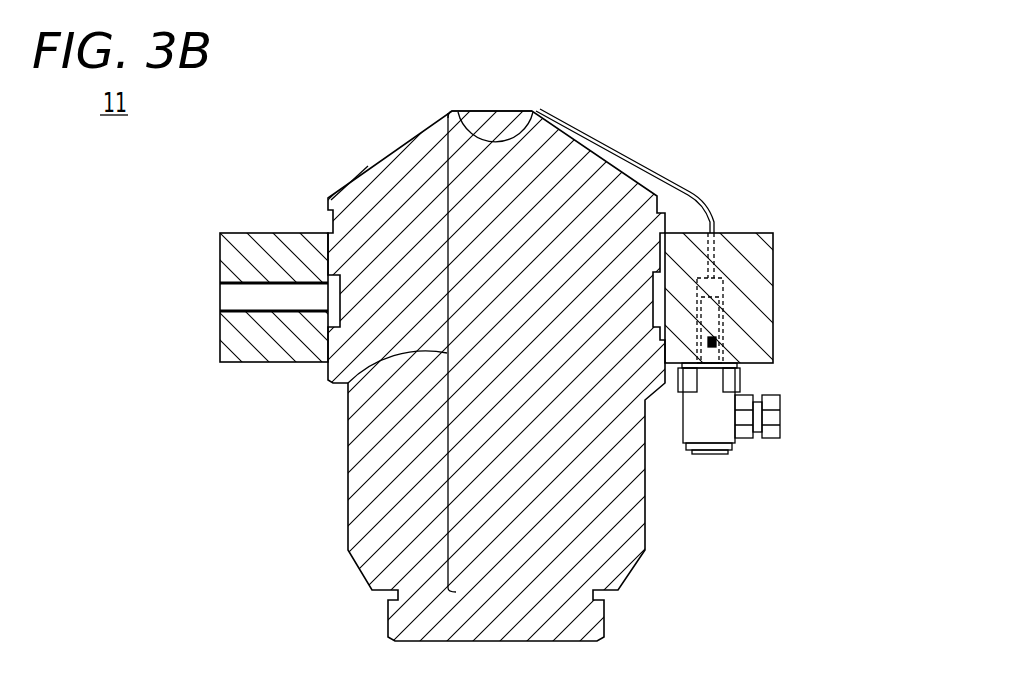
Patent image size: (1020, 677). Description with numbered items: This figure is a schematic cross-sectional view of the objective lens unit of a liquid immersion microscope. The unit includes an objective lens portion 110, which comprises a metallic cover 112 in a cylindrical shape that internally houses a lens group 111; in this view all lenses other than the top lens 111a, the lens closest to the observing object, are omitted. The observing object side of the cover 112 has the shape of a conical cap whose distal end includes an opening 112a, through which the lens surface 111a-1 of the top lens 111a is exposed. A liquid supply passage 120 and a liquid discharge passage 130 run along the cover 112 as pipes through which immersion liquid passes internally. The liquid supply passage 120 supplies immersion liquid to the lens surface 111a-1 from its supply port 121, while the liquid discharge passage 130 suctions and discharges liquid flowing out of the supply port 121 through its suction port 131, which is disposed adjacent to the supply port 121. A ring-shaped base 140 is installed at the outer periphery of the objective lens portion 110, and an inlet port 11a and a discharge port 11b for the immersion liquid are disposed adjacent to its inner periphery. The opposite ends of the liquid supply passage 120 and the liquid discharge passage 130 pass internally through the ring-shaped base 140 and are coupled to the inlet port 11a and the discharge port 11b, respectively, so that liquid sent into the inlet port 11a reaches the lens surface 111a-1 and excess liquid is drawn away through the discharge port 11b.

The objective lens portion 110 is at (352, 170).
The lens group 111 is at (347, 387).
The cover 112 is at (408, 146).
The opening 112a is at (480, 108).
The top lens 111a is at (530, 111).
The lens surface 111a-1 is at (512, 125).
The suction port 131 is at (676, 225).
The supply port 121 is at (676, 225).
The liquid supply passage 120 is at (676, 225).
The liquid discharge passage 130 is at (542, 110).
The ring-shaped base 140 is at (773, 273).
The inlet port 11a is at (796, 408).
The discharge port 11b is at (780, 412).